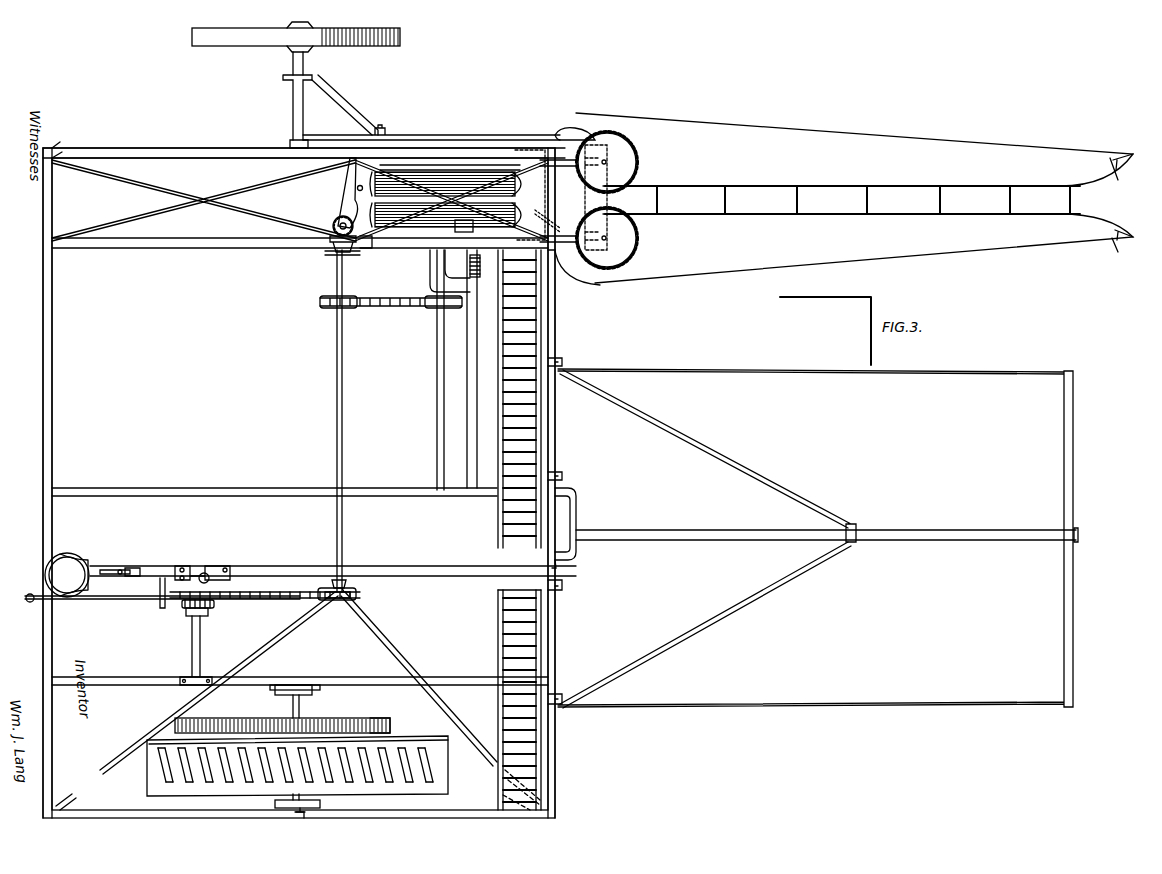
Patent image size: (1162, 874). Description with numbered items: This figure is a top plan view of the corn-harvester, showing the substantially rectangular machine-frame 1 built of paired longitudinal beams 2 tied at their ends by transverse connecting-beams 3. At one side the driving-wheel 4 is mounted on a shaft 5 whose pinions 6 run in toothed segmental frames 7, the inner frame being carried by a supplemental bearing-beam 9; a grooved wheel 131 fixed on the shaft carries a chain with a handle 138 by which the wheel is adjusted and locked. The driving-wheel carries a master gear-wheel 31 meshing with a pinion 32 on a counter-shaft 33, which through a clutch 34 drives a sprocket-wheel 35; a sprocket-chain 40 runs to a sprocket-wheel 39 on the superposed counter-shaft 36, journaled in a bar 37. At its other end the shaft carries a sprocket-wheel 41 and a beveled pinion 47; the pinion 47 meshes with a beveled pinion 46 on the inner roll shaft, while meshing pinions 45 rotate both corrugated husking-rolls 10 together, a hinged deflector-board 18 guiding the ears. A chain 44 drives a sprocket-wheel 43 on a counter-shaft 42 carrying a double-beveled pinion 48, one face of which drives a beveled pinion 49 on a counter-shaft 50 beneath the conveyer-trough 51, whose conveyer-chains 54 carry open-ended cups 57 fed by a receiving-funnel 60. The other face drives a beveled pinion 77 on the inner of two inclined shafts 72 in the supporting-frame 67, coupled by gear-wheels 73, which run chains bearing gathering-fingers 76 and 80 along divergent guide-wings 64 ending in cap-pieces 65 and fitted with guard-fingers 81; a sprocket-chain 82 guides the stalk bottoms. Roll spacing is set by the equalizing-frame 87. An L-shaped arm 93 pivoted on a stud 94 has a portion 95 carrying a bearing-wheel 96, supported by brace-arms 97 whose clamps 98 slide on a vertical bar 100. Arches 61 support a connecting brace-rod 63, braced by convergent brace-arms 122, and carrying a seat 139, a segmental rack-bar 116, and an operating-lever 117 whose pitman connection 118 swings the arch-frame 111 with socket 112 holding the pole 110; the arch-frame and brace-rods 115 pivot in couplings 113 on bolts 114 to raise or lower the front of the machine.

The machine-frame 1 is at (299, 483).
The longitudinal beams 2 is at (156, 157).
The transverse connecting-beams 3 is at (43, 448).
The driving-wheel 4 is at (382, 782).
The shaft 5 is at (300, 705).
The pinion 6 is at (470, 232).
The segmental frame 7 is at (272, 692).
The supplemental bearing-beam 9 is at (293, 685).
The husking-rolls 10 is at (462, 172).
The deflector-board 18 is at (380, 248).
The master gear-wheel 31 is at (375, 722).
The pinion 32 is at (212, 722).
The counter-shaft 33 is at (192, 651).
The clutch 34 is at (216, 612).
The sprocket-wheel 35 is at (164, 608).
The superposed counter-shaft 36 is at (343, 423).
The bar 37 is at (340, 256).
The sprocket-wheel 39 is at (336, 600).
The sprocket-chain 40 is at (270, 598).
The sprocket-wheel 41 is at (325, 308).
The counter-shaft 42 is at (438, 358).
The sprocket-wheel 43 is at (430, 308).
The chain 44 is at (382, 306).
The pinions 45 is at (352, 172).
The beveled pinion 46 is at (333, 220).
The beveled pinion 47 is at (335, 245).
The double-beveled pinion 48 is at (430, 272).
The beveled pinion 49 is at (481, 369).
The counter-shaft 50 is at (476, 272).
The conveyer-trough 51 is at (556, 409).
The conveyer-chains 54 is at (497, 610).
The cups 57 is at (519, 530).
The receiving-funnel 60 is at (560, 260).
The arches 61 is at (576, 510).
The connecting brace-rod 63 is at (165, 568).
The guide-wings 64 is at (854, 198).
The cap-pieces 65 is at (1124, 209).
The supporting-frame 67 is at (425, 165).
The shafts 72 is at (545, 160).
The gear-wheels 73 is at (640, 162).
The gathering-fingers 76 is at (726, 195).
The beveled pinion 77 is at (445, 172).
The gathering-fingers 80 is at (868, 195).
The guard-fingers 81 is at (513, 172).
The sprocket-chain 82 is at (548, 218).
The equalizing-frame 87 is at (223, 148).
The L-shaped arm 93 is at (395, 135).
The stud 94 is at (572, 128).
The outwardly-projecting portion 95 is at (304, 63).
The bearing-wheel 96 is at (372, 46).
The brace-arms 97 is at (293, 113).
The clamp 98 is at (288, 144).
The vertical bar 100 is at (295, 150).
The pole 110 is at (692, 541).
The arch-frame 111 is at (576, 549).
The socket 112 is at (578, 526).
The couplings 113 is at (560, 360).
The bolts 114 is at (558, 478).
The brace-rods 115 is at (693, 450).
The segmental rack-bar 116 is at (210, 576).
The operating-lever 117 is at (203, 572).
The pitman connection 118 is at (280, 566).
The convergent brace-arms 122 is at (395, 640).
The grooved wheel 131 is at (320, 802).
The handle 138 is at (279, 823).
The seat 139 is at (67, 575).